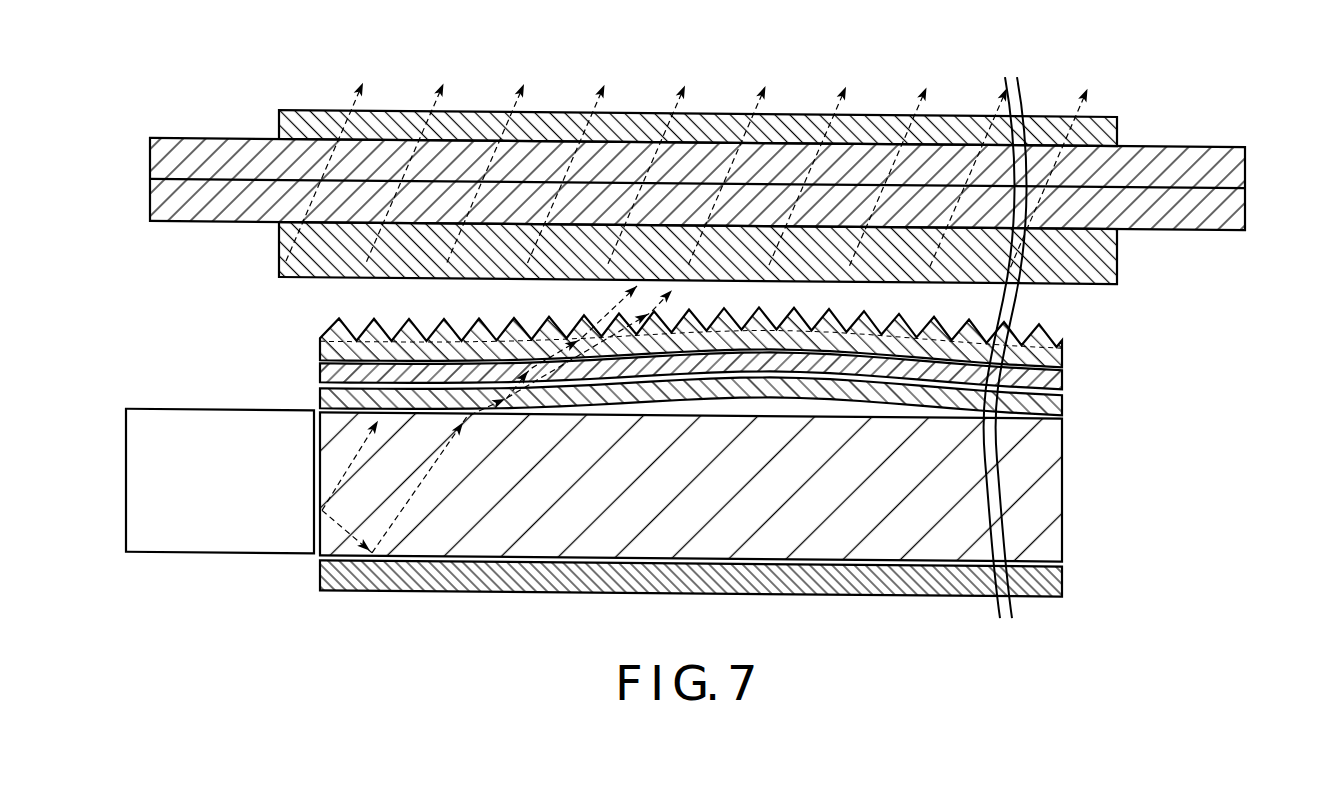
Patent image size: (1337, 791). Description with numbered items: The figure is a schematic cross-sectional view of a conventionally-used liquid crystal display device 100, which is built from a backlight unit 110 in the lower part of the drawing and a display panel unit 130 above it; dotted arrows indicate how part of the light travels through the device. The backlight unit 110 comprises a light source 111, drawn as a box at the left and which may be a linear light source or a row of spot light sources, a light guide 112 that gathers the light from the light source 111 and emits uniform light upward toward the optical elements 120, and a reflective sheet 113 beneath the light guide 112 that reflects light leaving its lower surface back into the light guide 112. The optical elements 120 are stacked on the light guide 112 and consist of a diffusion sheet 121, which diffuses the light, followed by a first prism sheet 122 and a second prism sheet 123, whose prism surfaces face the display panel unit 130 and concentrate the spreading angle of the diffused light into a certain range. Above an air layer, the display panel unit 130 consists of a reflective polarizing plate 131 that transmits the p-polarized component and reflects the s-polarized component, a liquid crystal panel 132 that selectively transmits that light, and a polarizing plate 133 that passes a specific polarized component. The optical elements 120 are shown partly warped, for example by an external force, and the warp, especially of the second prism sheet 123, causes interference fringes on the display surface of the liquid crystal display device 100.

The liquid crystal display device 100 is at (1138, 75).
The backlight unit 110 is at (1135, 316).
The light source 111 is at (172, 555).
The light guide 112 is at (1047, 469).
The reflective sheet 113 is at (1047, 576).
The optical elements 120 is at (1067, 315).
The diffusion sheet 121 is at (320, 399).
The first prism sheet 122 is at (320, 373).
The second prism sheet 123 is at (320, 346).
The display panel unit 130 is at (1248, 109).
The reflective polarizing plate 131 is at (278, 250).
The liquid crystal panel 132 is at (149, 147).
The polarizing plate 133 is at (278, 121).